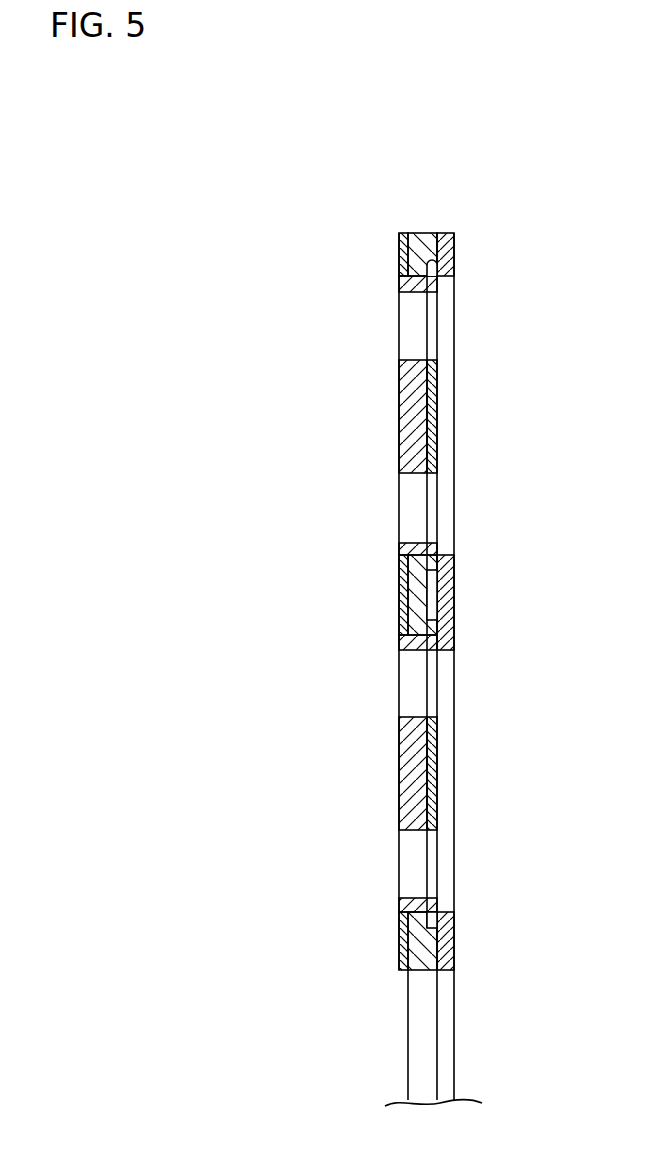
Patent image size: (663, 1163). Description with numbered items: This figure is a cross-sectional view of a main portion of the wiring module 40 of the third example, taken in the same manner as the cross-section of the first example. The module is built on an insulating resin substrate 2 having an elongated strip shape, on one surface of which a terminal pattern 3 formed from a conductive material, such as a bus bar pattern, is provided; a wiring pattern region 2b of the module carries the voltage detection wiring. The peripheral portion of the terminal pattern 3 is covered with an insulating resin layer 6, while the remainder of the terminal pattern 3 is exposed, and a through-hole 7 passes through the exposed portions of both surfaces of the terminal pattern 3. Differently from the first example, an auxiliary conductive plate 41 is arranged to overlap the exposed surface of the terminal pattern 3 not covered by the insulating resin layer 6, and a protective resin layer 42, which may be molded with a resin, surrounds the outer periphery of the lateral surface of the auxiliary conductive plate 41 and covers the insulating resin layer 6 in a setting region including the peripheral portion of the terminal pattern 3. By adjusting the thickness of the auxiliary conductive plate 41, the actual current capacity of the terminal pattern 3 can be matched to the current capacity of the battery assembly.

The wiring module 40 is at (424, 212).
The insulating resin substrate 2 is at (451, 265).
The wiring pattern region 2b is at (448, 1013).
The insulating resin layer 6 is at (422, 252).
The through-hole 7 is at (432, 327).
The terminal pattern 3 is at (422, 422).
The auxiliary conductive plate 41 is at (403, 282).
The protective resin layer 42 is at (400, 240).